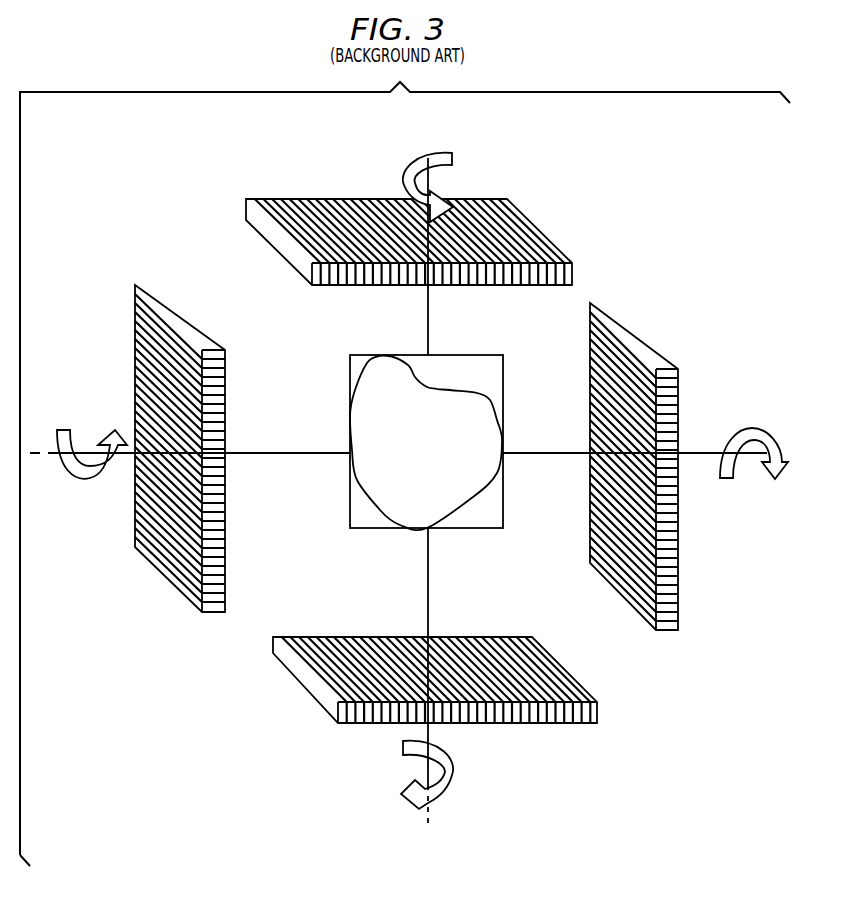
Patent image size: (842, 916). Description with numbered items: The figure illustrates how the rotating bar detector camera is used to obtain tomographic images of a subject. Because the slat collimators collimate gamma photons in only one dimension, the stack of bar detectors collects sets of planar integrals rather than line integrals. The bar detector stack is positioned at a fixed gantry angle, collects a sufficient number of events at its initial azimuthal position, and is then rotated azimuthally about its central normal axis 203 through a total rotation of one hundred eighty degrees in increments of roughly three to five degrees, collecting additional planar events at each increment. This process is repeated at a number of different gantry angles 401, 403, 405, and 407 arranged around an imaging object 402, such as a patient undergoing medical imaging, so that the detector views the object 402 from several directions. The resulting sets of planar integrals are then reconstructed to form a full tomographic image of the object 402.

The central normal axis 203 is at (405, 168).
The gantry angle 401 is at (518, 208).
The imaging object 402 is at (426, 442).
The gantry angle 403 is at (678, 584).
The gantry angle 405 is at (552, 724).
The gantry angle 407 is at (135, 315).